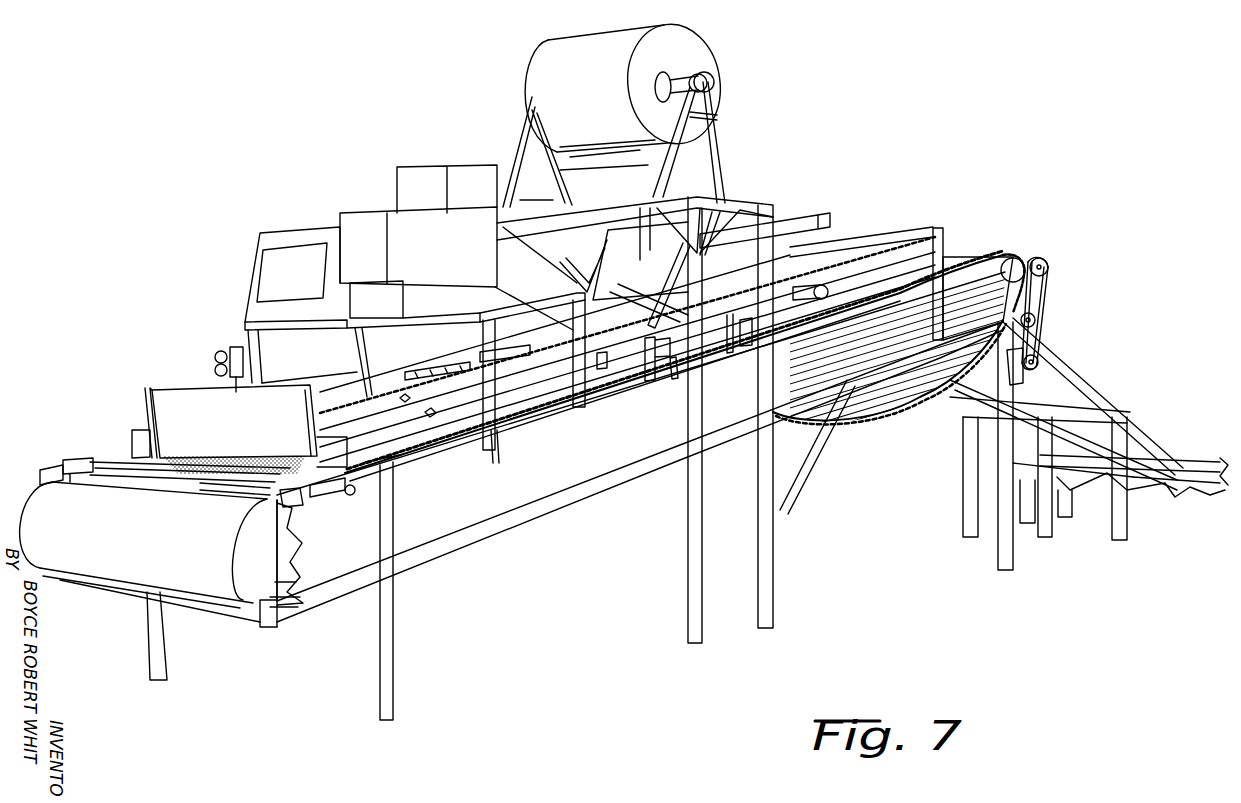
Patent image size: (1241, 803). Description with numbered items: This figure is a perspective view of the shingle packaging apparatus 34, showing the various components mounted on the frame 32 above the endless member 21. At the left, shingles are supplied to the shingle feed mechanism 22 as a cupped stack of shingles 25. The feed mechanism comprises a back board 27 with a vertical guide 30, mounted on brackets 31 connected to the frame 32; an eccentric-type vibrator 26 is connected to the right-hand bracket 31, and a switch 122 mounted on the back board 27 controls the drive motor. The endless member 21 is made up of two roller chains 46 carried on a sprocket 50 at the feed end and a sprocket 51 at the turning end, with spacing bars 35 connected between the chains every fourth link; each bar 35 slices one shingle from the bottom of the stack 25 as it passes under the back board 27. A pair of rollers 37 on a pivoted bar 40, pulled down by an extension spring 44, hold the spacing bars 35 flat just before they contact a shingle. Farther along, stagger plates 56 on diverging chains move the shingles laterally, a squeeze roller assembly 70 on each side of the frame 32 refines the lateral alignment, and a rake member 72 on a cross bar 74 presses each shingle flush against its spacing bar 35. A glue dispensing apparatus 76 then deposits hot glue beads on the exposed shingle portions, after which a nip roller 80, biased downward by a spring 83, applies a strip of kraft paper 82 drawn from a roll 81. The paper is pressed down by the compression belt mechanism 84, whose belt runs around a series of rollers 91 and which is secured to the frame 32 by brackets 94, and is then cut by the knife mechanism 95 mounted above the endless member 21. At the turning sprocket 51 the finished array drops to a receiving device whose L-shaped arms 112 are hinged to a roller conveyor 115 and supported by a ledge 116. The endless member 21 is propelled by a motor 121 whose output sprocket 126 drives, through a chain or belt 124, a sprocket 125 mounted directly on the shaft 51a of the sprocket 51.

The endless member 21 is at (492, 432).
The shingle feed mechanism 22 is at (190, 383).
The stack of shingles 25 is at (135, 462).
The eccentric-type vibrator 26 is at (352, 495).
The back board 27 is at (233, 421).
The vertical guide 30 is at (152, 415).
The brackets 31 is at (133, 445).
The frame 32 is at (632, 496).
The packaging apparatus 34 is at (796, 207).
The spacing bars 35 is at (538, 397).
The rollers 37 is at (165, 482).
The bar 40 is at (235, 490).
The extension spring 44 is at (295, 490).
The roller chains 46 is at (385, 460).
The sprocket 50 is at (300, 528).
The sprocket 51 is at (1017, 256).
The shaft 51a is at (1005, 285).
The stagger plates 56 is at (408, 402).
The squeeze roller assembly 70 is at (416, 372).
The rake member 72 is at (500, 348).
The cross bar 74 is at (673, 380).
The glue dispensing apparatus 76 is at (418, 241).
The nip roller 80 is at (728, 350).
The roll 81 is at (626, 87).
The kraft paper 82 is at (640, 261).
The spring 83 is at (560, 250).
The compression belt mechanism 84 is at (833, 230).
The rollers 91 is at (746, 348).
The brackets 94 is at (855, 262).
The knife mechanism 95 is at (910, 245).
The L-shaped arms 112 is at (1180, 455).
The roller conveyor 115 is at (1144, 500).
The ledge 116 is at (1143, 432).
The motor 121 is at (1017, 373).
The switch 122 is at (228, 353).
The chain or belt 124 is at (1047, 296).
The sprocket 125 is at (1049, 267).
The sprocket 126 is at (1040, 360).